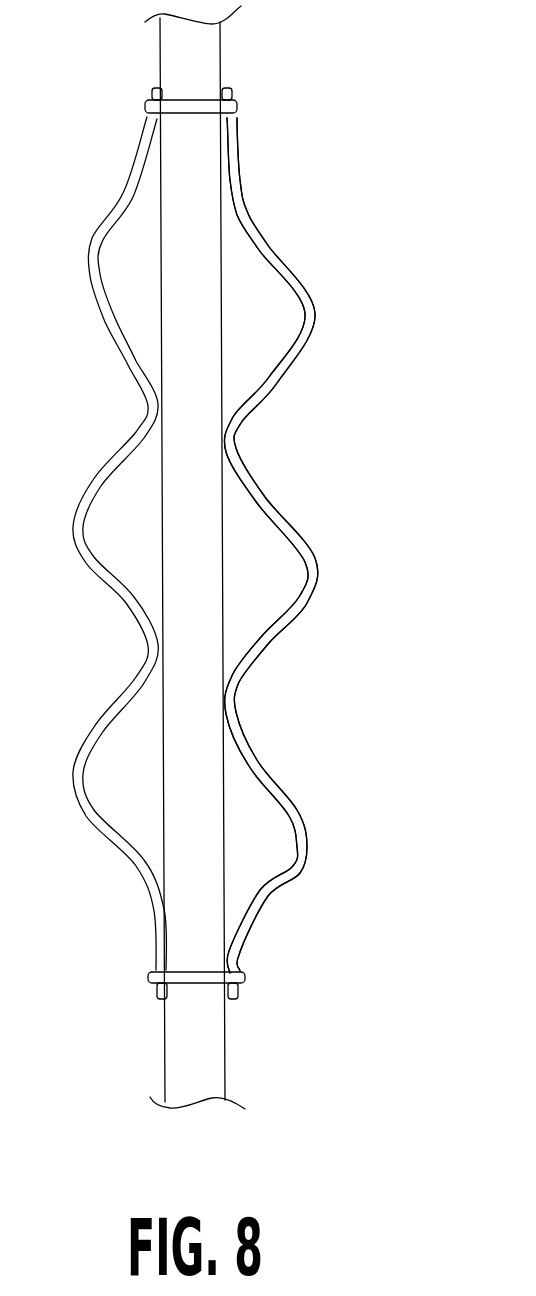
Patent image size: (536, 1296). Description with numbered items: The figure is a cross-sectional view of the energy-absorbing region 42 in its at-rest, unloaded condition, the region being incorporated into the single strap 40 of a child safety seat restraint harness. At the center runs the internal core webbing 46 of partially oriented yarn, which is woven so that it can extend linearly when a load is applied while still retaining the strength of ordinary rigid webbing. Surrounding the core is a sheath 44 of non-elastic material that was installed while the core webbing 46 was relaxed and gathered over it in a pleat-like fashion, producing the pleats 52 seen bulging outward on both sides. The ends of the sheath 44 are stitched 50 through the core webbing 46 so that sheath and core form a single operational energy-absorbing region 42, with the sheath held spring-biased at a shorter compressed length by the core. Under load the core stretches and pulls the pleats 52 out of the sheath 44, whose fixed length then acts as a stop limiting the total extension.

The single strap 40 is at (205, 1058).
The energy-absorbing region 42 is at (205, 545).
The sheath 44 is at (269, 507).
The internal core webbing 46 is at (202, 467).
The stitching 50 is at (200, 100).
The pleats 52 is at (88, 240).